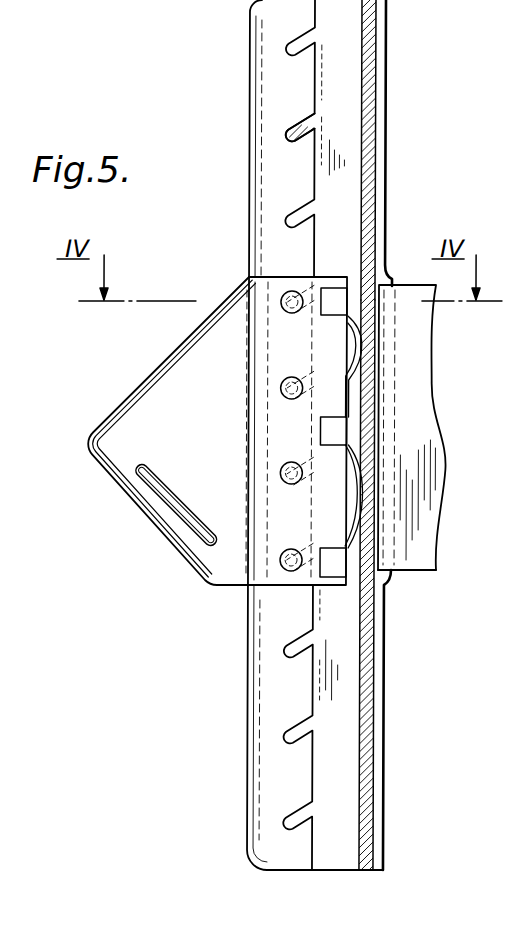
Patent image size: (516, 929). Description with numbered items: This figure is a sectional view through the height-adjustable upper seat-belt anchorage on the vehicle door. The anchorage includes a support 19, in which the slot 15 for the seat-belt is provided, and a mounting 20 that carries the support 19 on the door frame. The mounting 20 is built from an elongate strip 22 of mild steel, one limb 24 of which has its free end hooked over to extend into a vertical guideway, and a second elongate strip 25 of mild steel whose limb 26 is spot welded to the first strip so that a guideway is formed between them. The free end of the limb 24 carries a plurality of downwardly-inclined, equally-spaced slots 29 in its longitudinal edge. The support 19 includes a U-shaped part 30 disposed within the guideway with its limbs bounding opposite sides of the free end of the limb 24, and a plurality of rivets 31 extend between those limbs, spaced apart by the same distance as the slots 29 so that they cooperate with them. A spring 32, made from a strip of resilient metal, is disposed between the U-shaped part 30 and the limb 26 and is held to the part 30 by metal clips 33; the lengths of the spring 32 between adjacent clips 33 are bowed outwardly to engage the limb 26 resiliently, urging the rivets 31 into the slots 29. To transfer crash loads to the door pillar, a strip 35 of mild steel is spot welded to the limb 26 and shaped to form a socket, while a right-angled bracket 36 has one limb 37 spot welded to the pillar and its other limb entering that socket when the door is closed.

The slot 15 is at (176, 503).
The support 19 is at (215, 589).
The mounting 20 is at (388, 206).
The elongate strip 22 is at (249, 220).
The limb 24 is at (256, 688).
The elongate strip 25 is at (385, 151).
The limb 26 is at (368, 690).
The slots 29 is at (318, 117).
The U-shaped part 30 is at (283, 587).
The rivets 31 is at (283, 553).
The spring 32 is at (352, 388).
The metal clips 33 is at (341, 433).
The strip 35 is at (381, 50).
The right-angled bracket 36 is at (449, 480).
The limb 37 is at (425, 556).